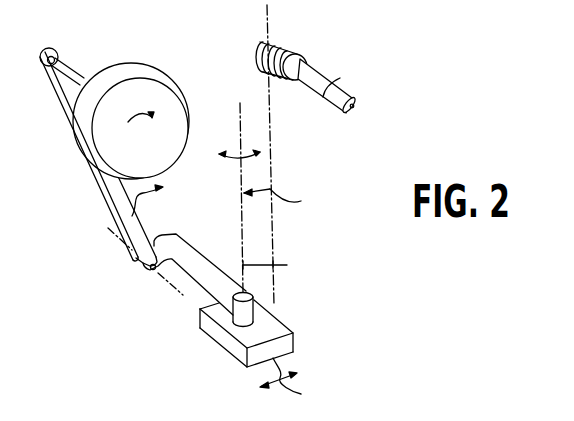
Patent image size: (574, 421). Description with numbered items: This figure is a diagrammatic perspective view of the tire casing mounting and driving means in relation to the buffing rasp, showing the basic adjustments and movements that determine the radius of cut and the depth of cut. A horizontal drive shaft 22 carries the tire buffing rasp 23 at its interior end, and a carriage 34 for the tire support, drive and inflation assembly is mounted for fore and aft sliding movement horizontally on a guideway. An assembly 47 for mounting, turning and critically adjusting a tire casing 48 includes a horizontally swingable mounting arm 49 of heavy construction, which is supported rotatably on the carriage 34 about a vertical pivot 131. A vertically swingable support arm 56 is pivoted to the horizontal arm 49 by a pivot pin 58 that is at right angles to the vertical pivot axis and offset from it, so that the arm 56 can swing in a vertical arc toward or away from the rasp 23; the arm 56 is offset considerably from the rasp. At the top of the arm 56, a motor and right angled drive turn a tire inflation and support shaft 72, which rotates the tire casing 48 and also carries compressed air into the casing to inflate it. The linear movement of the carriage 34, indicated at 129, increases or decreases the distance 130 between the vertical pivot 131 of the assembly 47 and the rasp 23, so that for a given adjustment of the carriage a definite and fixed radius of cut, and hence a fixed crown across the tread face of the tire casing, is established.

The horizontal drive shaft 22 is at (346, 97).
The tire buffing rasp 23 is at (288, 47).
The carriage 34 is at (278, 329).
The assembly 47 is at (70, 135).
The tire casing 48 is at (138, 68).
The horizontally swingable mounting arm 49 is at (203, 257).
The vertically swingable support arm 56 is at (117, 195).
The pivot pin 58 is at (151, 270).
The tire inflation and support shaft 72 is at (74, 71).
The linear movement of the carriage 129 is at (292, 380).
The distance 130 is at (273, 181).
The vertical pivot 131 is at (273, 155).